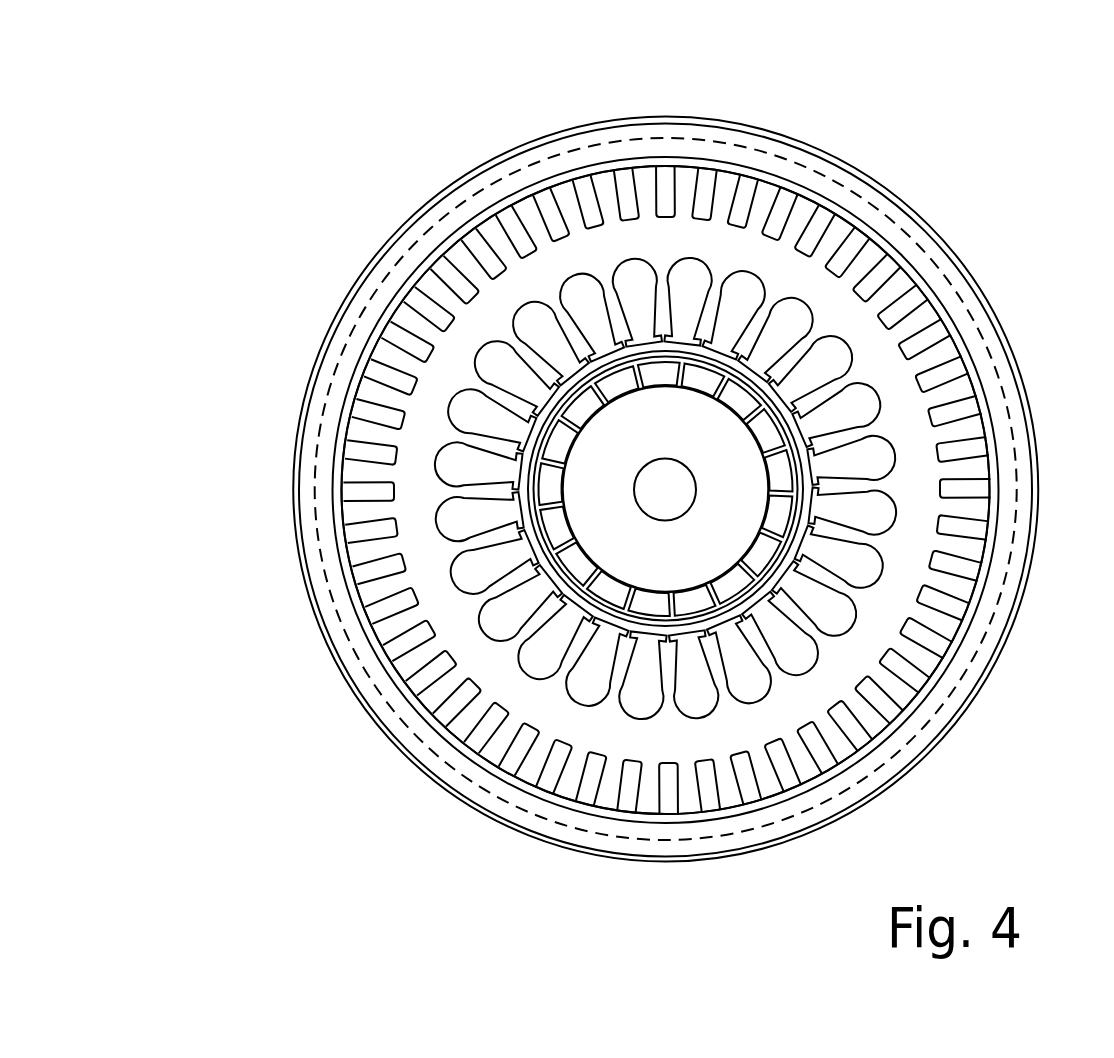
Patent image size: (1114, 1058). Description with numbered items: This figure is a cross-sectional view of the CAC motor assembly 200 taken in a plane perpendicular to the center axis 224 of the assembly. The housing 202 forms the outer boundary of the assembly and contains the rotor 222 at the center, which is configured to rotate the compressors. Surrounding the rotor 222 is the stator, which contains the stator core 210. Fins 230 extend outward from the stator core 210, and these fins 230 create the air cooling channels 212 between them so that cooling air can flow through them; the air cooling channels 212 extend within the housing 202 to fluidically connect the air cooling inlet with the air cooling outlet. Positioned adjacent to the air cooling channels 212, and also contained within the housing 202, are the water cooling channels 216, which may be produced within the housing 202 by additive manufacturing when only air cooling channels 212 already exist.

The CAC motor assembly 200 is at (1018, 146).
The housing 202 is at (410, 218).
The stator core 210 is at (452, 358).
The air cooling channels 212 is at (380, 568).
The water cooling channels 216 is at (369, 676).
The rotor 222 is at (605, 477).
The center axis 224 is at (656, 495).
The fins 230 is at (538, 763).